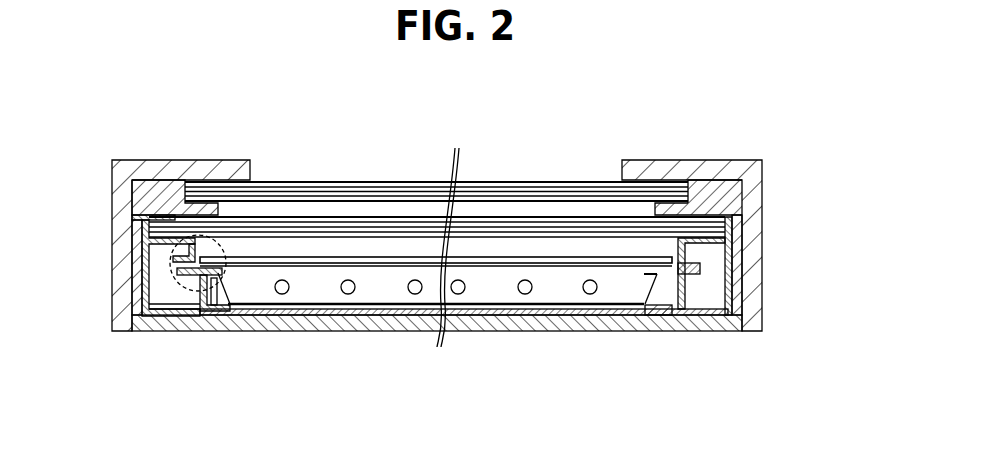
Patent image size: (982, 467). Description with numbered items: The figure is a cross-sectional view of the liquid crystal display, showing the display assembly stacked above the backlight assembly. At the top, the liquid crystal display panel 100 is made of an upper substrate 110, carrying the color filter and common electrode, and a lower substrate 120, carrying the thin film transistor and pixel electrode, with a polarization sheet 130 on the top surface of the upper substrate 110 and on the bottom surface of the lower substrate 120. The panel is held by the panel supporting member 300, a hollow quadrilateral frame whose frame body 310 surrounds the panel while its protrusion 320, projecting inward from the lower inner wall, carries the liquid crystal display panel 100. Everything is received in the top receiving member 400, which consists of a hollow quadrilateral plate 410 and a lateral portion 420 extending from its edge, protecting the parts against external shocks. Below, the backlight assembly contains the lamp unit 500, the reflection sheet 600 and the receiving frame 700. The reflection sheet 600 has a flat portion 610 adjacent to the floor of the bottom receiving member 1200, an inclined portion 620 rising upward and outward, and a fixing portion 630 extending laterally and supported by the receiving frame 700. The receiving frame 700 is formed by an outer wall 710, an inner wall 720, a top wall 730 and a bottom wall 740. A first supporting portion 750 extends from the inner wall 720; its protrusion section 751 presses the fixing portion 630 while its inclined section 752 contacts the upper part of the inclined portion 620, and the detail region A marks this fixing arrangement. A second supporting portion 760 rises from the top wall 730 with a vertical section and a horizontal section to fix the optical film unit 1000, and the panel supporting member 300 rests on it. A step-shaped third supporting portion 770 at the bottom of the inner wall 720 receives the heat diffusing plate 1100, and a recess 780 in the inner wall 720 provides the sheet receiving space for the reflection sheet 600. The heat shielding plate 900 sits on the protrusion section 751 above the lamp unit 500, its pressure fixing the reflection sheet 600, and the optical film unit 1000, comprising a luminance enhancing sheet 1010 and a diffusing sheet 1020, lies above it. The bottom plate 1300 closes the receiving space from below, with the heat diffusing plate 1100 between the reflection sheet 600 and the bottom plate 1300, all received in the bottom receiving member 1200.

The liquid crystal display panel 100 is at (436, 147).
The upper substrate 110 is at (300, 184).
The lower substrate 120 is at (348, 190).
The polarization sheet 130 is at (287, 130).
The panel supporting member 300 is at (766, 188).
The frame body 310 is at (735, 192).
The protrusion 320 is at (722, 210).
The top receiving member 400 is at (161, 145).
The quadrilateral plate 410 is at (137, 170).
The lateral portion 420 is at (157, 112).
The lamp unit 500 is at (348, 294).
The reflection sheet 600 is at (665, 340).
The flat portion 610 is at (618, 305).
The inclined portion 620 is at (667, 315).
The fixing portion 630 is at (705, 320).
The receiving frame 700 is at (382, 317).
The outer wall 710 is at (148, 263).
The inner wall 720 is at (147, 308).
The top wall 730 is at (141, 241).
The bottom wall 740 is at (135, 331).
The first supporting portion 750 is at (179, 328).
The protrusion section 751 is at (197, 325).
The inclined section 752 is at (199, 323).
The second supporting portion 760 is at (147, 218).
The third supporting portion 770 is at (234, 343).
The recess 780 is at (175, 287).
The heat shielding plate 900 is at (557, 264).
The optical film unit 1000 is at (517, 233).
The luminance enhancing sheet 1010 is at (728, 219).
The diffusing sheet 1020 is at (728, 236).
The heat diffusing plate 1100 is at (417, 307).
The bottom receiving member 1200 is at (285, 325).
The bottom plate 1300 is at (490, 316).
The detail region A is at (198, 235).